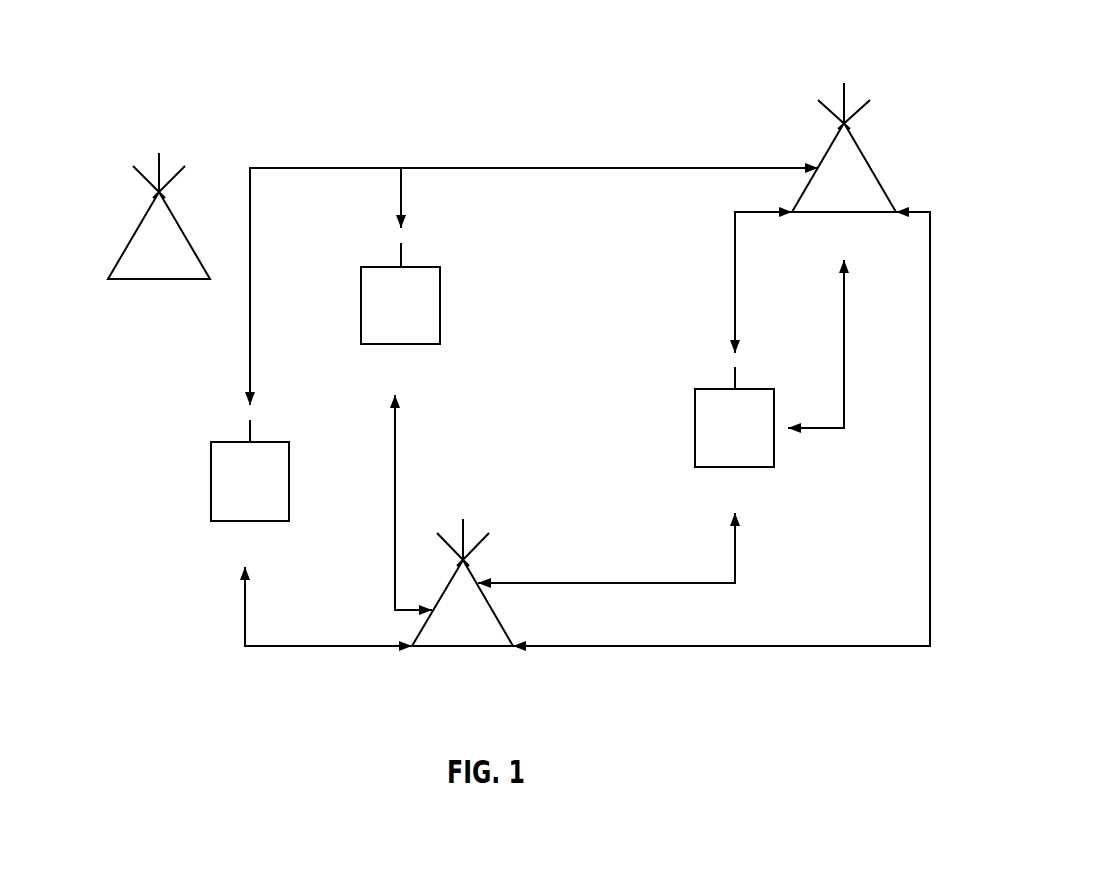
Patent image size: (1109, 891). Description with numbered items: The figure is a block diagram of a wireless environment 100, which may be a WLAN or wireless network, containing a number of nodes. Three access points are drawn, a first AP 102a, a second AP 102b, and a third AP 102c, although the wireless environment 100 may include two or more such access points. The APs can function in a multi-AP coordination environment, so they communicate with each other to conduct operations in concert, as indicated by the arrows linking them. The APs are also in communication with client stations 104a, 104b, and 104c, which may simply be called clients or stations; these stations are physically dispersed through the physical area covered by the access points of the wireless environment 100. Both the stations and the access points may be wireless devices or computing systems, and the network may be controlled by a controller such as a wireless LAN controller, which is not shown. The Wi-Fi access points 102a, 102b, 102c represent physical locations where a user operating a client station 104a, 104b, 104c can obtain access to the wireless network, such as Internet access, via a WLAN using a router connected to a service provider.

The wireless environment 100 is at (118, 50).
The first AP 102a is at (505, 631).
The second AP 102b is at (868, 163).
The AP 102c is at (135, 237).
The client station 104a is at (361, 305).
The client station 104b is at (774, 448).
The client station 104c is at (211, 480).